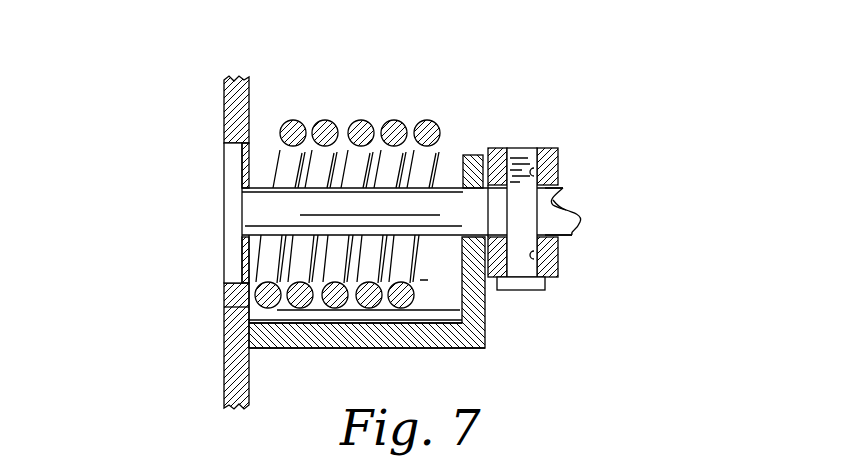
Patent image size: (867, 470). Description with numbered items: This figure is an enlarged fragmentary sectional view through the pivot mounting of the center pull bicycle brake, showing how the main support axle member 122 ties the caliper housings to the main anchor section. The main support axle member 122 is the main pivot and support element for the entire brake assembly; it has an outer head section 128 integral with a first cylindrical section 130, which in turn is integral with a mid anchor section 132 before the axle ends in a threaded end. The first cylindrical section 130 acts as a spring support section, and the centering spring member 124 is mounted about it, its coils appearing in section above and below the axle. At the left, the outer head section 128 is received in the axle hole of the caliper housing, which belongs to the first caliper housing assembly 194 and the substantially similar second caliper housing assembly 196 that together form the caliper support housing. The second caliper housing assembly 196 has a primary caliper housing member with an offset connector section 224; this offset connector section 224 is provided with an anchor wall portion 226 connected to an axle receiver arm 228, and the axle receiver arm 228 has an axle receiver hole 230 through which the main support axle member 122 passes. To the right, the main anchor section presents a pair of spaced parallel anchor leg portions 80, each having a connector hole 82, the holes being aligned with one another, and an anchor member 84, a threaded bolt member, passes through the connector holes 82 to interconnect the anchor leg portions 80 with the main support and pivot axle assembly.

The first caliper housing assembly 194 is at (224, 112).
The second caliper housing assembly 196 is at (224, 343).
The outer head section 128 is at (235, 260).
The centering spring member 124 is at (342, 195).
The first cylindrical section 130 is at (350, 145).
The main support axle member 122 is at (568, 228).
The mid anchor section 132 is at (553, 203).
The offset connector section 224 is at (488, 323).
The anchor wall portion 226 is at (366, 335).
The axle receiver arm 228 is at (472, 155).
The connector hole 82 is at (507, 148).
The anchor leg portion 80 is at (560, 178).
The axle receiver hole 230 is at (537, 148).
The anchor member 84 is at (523, 283).